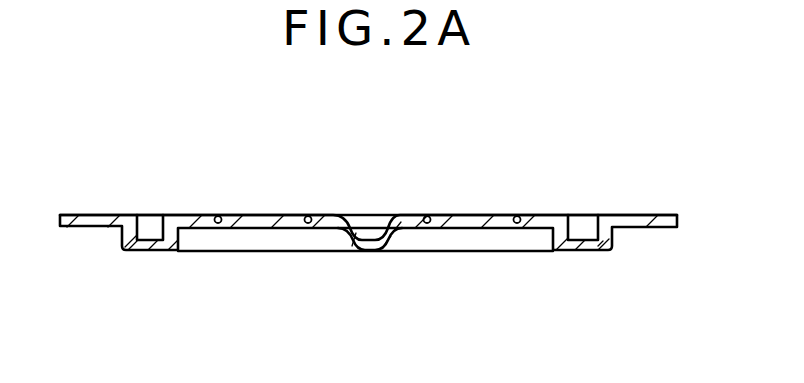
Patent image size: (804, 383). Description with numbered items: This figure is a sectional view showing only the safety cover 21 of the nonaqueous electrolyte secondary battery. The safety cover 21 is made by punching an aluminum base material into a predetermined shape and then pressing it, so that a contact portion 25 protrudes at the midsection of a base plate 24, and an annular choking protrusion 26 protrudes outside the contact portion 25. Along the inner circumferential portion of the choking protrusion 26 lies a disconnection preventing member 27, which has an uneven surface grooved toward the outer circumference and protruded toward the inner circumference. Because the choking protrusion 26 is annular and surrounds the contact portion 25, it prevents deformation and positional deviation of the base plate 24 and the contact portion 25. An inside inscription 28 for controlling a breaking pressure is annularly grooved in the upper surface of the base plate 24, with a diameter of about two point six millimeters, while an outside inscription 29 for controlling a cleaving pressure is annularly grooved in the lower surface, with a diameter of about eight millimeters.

The safety cover 21 is at (603, 195).
The base plate 24 is at (457, 215).
The contact portion 25 is at (375, 250).
The choking protrusion 26 is at (593, 248).
The disconnection preventing member 27 is at (177, 245).
The inside inscription 28 is at (307, 215).
The outside inscription 29 is at (221, 222).